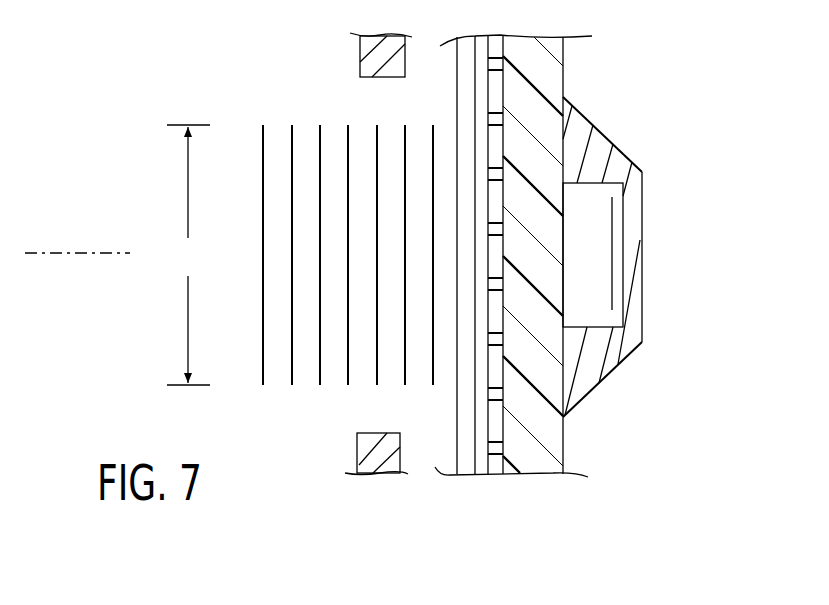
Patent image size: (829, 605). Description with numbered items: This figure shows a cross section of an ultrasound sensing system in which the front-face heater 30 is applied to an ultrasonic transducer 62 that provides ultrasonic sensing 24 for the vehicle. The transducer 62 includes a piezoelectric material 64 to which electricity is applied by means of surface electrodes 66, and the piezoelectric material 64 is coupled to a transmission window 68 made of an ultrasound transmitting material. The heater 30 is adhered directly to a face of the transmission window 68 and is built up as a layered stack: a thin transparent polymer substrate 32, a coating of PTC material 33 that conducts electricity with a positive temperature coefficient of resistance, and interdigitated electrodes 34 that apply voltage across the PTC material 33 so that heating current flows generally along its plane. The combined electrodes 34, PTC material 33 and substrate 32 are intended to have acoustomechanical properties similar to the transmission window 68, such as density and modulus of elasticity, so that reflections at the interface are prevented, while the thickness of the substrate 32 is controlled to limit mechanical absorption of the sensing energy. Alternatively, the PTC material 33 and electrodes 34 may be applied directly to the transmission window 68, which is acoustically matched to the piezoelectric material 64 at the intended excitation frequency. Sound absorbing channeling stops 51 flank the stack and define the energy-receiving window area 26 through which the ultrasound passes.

The ultrasonic sensing 24 is at (725, 100).
The window area 26 is at (188, 255).
The front-face heater 30 is at (523, 497).
The substrate 32 is at (465, 462).
The PTC material 33 is at (480, 465).
The electrodes 34 is at (493, 485).
The sound absorbing channeling stops 51 is at (357, 468).
The ultrasonic transducer 62 is at (663, 183).
The piezoelectric material 64 is at (637, 345).
The surface electrodes 66 is at (606, 252).
The transmission window 68 is at (540, 425).